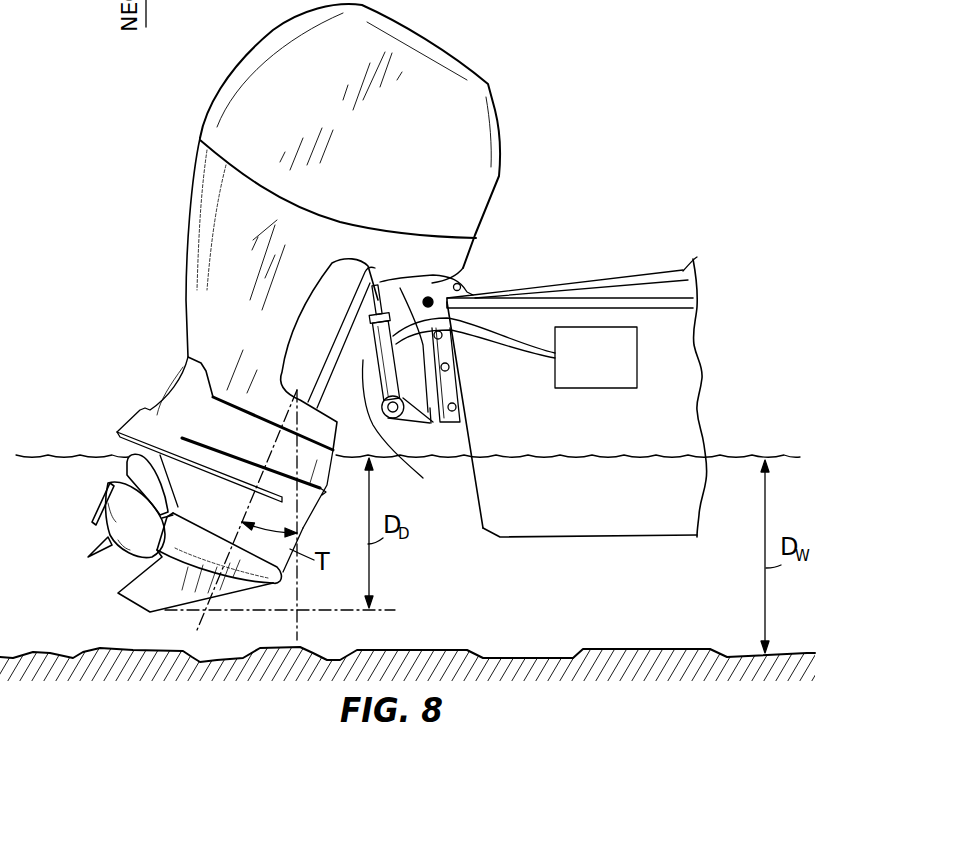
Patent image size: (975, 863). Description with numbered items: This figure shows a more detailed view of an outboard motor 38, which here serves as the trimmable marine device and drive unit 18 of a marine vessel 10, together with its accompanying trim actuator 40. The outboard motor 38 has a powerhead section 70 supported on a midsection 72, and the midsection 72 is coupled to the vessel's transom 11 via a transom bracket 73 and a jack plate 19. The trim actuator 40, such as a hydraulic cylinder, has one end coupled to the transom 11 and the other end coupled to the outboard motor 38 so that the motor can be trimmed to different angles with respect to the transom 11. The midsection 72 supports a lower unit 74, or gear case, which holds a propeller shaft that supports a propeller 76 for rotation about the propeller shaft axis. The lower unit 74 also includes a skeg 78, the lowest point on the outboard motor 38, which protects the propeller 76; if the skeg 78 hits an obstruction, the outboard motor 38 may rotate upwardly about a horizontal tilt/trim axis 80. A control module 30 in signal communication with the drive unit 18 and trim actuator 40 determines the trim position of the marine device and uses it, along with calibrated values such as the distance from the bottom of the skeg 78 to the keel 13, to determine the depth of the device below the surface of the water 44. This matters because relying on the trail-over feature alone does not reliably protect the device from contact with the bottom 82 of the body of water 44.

The marine vessel 10 is at (683, 348).
The transom 11 is at (480, 507).
The keel 13 is at (598, 538).
The drive unit 18 is at (522, 181).
The jack plate 19 is at (450, 386).
The control module 30 is at (609, 366).
The outboard motor 38 is at (216, 88).
The trim actuator 40 is at (383, 440).
The water 44 is at (733, 457).
The powerhead section 70 is at (425, 87).
The midsection 72 is at (237, 272).
The transom bracket 73 is at (432, 420).
The lower unit 74 is at (160, 425).
The propeller 76 is at (115, 512).
The skeg 78 is at (145, 592).
The horizontal tilt/trim axis 80 is at (468, 268).
The bottom 82 is at (781, 652).